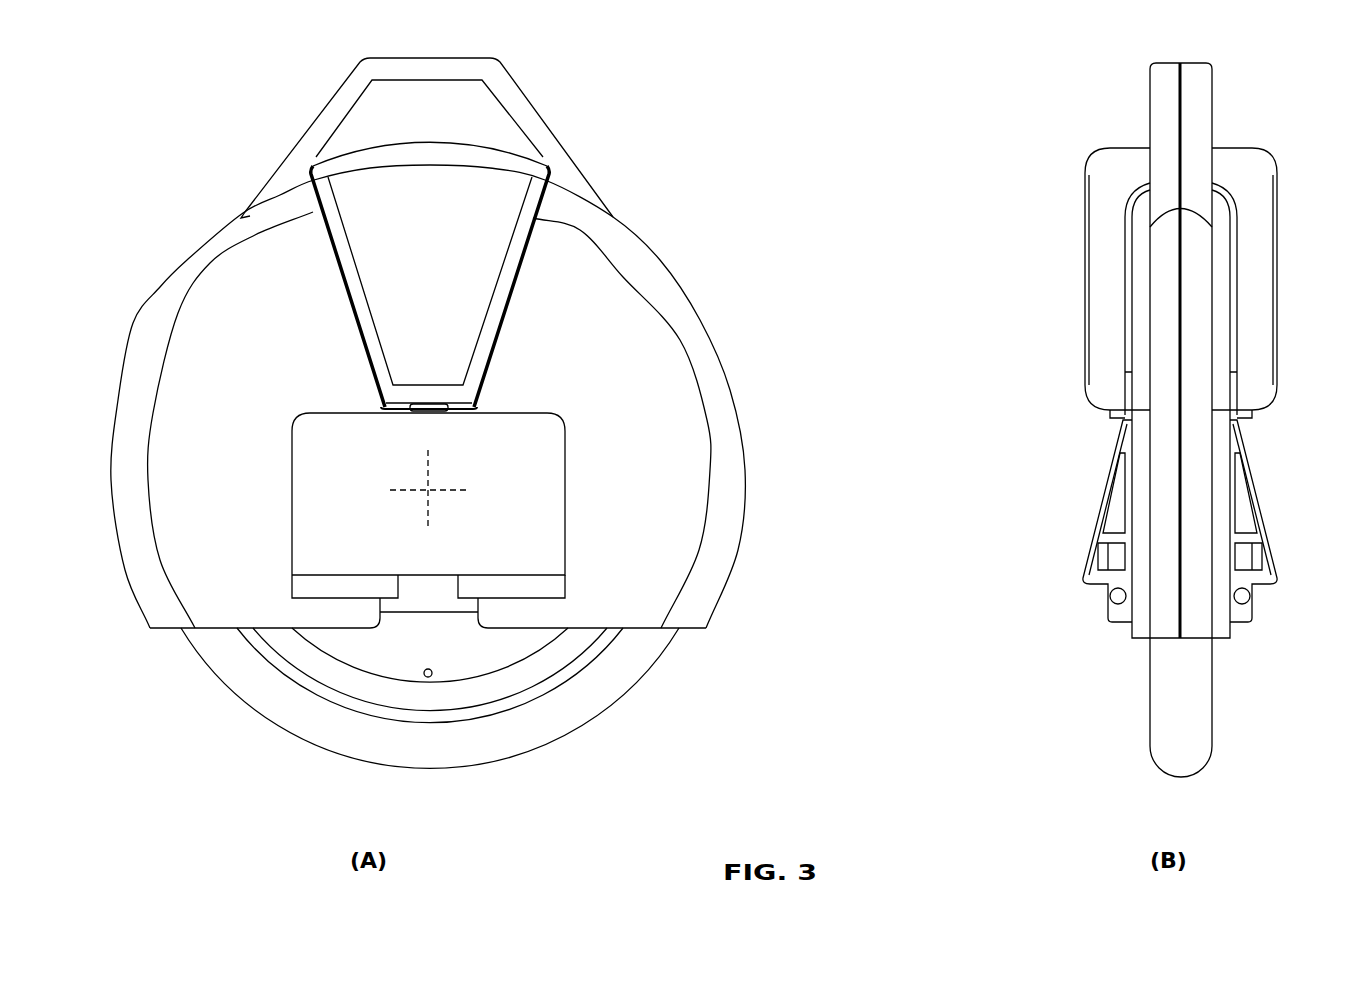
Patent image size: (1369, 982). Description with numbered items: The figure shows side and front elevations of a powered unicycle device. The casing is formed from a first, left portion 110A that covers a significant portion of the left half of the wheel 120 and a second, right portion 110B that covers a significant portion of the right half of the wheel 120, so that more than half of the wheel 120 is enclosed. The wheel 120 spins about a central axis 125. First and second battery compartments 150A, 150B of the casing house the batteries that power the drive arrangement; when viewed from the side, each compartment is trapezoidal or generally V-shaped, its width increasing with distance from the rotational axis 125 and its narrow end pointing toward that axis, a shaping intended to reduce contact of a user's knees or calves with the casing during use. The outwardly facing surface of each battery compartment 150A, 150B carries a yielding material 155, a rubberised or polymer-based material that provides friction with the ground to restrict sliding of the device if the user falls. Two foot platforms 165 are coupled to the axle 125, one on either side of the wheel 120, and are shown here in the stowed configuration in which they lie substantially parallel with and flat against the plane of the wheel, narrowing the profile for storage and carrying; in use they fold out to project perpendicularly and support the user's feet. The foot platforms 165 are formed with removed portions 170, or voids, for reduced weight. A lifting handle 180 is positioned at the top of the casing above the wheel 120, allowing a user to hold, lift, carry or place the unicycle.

In FIG. 3A, the first, left portion 110A is at (643, 440).
In FIG. 3B, the first, left portion 110A is at (1152, 610).
In FIG. 3B, the second, right portion 110B is at (1210, 610).
In FIG. 3A, the wheel 120 is at (540, 725).
In FIG. 3B, the wheel 120 is at (1165, 752).
In FIG. 3A, the central axis 125 is at (422, 470).
In FIG. 3A, the first battery compartment 150A is at (500, 162).
In FIG. 3B, the first battery compartment 150A is at (1122, 178).
In FIG. 3B, the second battery compartment 150B is at (1238, 178).
In FIG. 3A, the yielding material 155 is at (466, 266).
In FIG. 3A, the foot platforms 165 is at (330, 545).
In FIG. 3B, the foot platforms 165 is at (1105, 495).
In FIG. 3B, the removed portions 170 is at (1120, 516).
In FIG. 3A, the lifting handle 180 is at (511, 95).
In FIG. 3B, the lifting handle 180 is at (1212, 90).